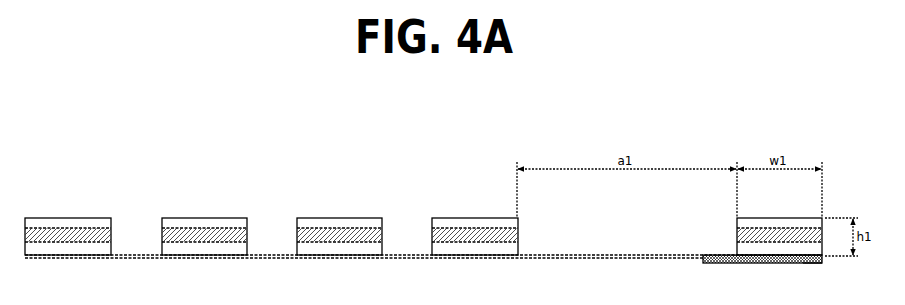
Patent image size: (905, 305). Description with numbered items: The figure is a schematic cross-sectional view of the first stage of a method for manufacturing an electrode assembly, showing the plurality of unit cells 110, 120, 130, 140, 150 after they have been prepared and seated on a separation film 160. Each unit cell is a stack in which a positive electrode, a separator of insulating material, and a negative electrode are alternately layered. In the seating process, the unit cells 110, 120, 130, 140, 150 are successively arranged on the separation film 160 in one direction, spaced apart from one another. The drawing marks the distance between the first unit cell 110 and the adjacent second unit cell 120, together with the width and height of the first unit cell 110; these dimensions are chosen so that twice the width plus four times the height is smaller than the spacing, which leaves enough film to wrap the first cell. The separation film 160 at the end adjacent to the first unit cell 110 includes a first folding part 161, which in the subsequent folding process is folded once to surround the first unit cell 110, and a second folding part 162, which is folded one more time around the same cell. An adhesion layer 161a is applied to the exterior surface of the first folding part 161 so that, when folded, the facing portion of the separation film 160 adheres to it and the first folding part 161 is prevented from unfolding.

The first unit cell 110 is at (734, 228).
The second unit cell 120 is at (480, 216).
The unit cell 130 is at (344, 216).
The unit cell 140 is at (209, 216).
The unit cell 150 is at (77, 216).
The separation film 160 is at (139, 260).
The first folding part 161 is at (718, 263).
The adhesion layer 161a is at (815, 264).
The second folding part 162 is at (649, 259).